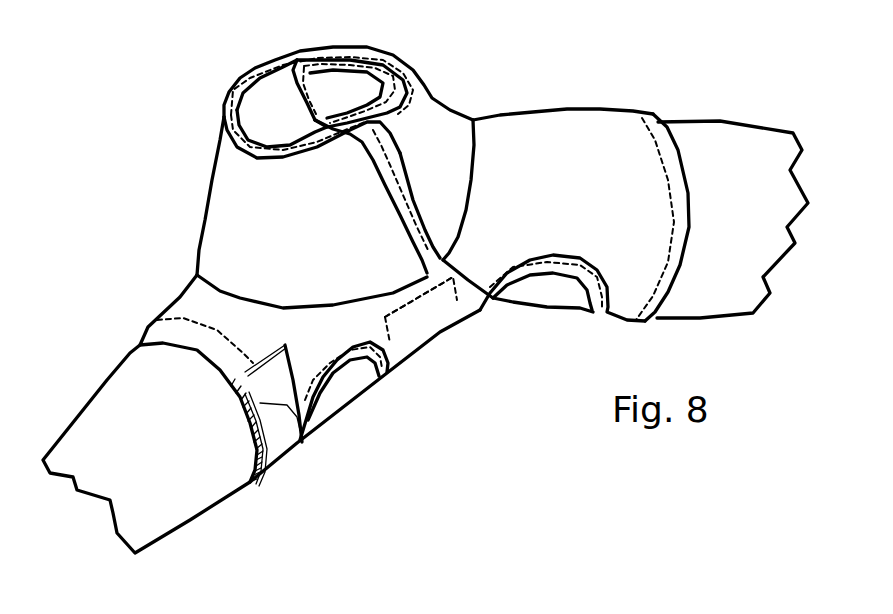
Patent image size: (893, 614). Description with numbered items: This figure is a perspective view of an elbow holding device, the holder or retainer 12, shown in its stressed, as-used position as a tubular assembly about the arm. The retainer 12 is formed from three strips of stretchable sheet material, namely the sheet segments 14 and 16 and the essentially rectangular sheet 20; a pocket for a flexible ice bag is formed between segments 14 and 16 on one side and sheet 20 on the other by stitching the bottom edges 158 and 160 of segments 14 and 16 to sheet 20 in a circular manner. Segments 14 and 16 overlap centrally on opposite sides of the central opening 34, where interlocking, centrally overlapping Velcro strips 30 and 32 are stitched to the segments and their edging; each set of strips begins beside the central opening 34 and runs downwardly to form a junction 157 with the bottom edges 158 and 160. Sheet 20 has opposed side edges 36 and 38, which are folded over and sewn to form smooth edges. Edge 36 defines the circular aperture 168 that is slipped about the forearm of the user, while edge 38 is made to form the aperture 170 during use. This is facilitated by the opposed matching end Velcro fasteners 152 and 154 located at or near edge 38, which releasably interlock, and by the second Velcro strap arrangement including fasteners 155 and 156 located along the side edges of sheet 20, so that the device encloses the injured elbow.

The holder or retainer 12 is at (172, 160).
The sheet segment 14 is at (308, 226).
The sheet segment 16 is at (441, 152).
The sheet material 20 is at (553, 177).
The Velcro strip 30 is at (348, 87).
The Velcro strip 32 is at (350, 72).
The central opening 34 is at (243, 103).
The side edge 36 is at (732, 219).
The side edge 38 is at (281, 391).
The Velcro fastener 152 is at (262, 454).
The Velcro fastener 154 is at (301, 416).
The Velcro fastener 155 is at (435, 326).
The Velcro fastener 156 is at (453, 326).
The junction 157 is at (482, 253).
The bottom edge 158 is at (154, 276).
The bottom edge 160 is at (563, 108).
The circular aperture 168 is at (681, 199).
The aperture 170 is at (192, 412).